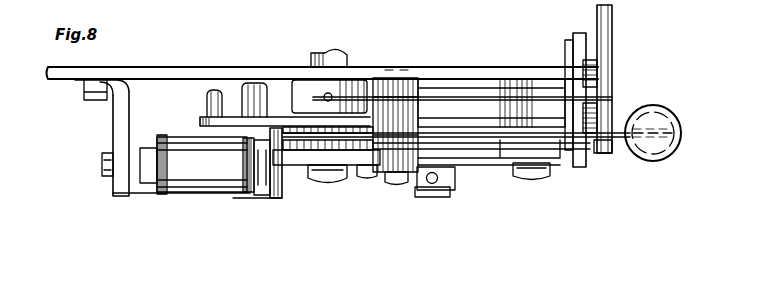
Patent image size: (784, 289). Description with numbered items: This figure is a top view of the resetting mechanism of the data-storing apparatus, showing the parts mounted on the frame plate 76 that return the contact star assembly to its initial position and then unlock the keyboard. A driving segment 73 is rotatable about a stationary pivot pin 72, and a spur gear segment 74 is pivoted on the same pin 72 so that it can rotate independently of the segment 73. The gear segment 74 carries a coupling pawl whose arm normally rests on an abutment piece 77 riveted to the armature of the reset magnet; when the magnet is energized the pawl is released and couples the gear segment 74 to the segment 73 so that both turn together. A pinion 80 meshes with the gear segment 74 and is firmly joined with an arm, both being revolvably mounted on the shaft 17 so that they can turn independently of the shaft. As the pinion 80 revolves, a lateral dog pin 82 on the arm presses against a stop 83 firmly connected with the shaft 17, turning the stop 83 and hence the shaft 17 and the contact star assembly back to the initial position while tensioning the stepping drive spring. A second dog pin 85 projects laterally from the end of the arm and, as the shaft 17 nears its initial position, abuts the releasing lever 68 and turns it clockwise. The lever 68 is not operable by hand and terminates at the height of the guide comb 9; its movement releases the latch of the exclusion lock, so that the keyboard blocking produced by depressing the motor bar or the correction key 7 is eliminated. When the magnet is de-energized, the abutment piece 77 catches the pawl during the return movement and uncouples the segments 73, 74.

The frame plate 76 is at (168, 77).
The dog pin 85 is at (215, 91).
The dog pin 82 is at (254, 98).
The pinion 80 is at (274, 121).
The stop 83 is at (302, 100).
The shaft 17 is at (345, 54).
The releasing lever 68 is at (473, 96).
The guide comb 9 is at (603, 36).
The abutment piece 77 is at (278, 202).
The spur gear segment 74 is at (478, 143).
The segment 73 is at (505, 153).
The stationary pivot pin 72 is at (549, 118).
The correction key 7 is at (648, 146).